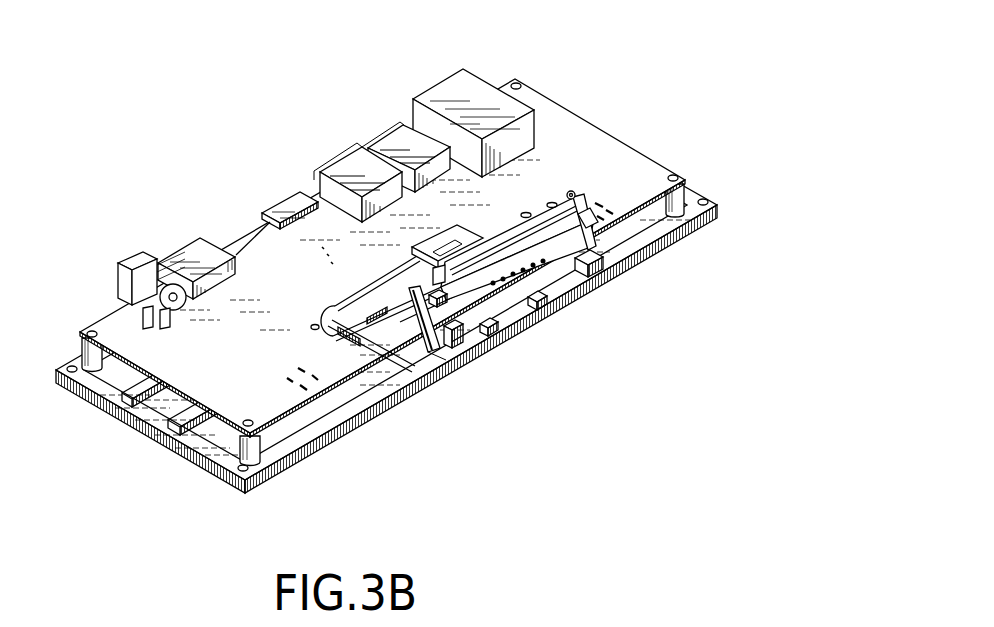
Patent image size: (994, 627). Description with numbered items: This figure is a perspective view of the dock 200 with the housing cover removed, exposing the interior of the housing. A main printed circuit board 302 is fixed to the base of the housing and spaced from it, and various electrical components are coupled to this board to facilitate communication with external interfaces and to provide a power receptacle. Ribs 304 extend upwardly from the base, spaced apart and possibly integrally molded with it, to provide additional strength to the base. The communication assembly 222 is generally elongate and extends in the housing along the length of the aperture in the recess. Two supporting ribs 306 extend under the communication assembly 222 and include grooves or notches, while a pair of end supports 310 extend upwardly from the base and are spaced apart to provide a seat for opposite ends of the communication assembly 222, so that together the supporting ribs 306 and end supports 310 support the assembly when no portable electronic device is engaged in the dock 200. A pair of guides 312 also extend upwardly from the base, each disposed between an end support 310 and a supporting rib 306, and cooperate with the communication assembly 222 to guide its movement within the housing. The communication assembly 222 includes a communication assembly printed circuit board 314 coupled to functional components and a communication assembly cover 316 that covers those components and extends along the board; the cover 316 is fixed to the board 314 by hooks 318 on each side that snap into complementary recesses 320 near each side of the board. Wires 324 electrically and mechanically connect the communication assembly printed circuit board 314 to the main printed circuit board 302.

The dock 200 is at (227, 510).
The communication assembly 222 is at (573, 183).
The main printed circuit board 302 is at (580, 132).
The ribs 304 is at (137, 403).
The supporting ribs 306 is at (528, 296).
The end supports 310 is at (588, 252).
The guides 312 is at (588, 258).
The communication assembly printed circuit board 314 is at (597, 242).
The communication assembly cover 316 is at (583, 222).
The hooks 318 is at (412, 292).
The recesses 320 is at (438, 301).
The wires 324 is at (340, 280).